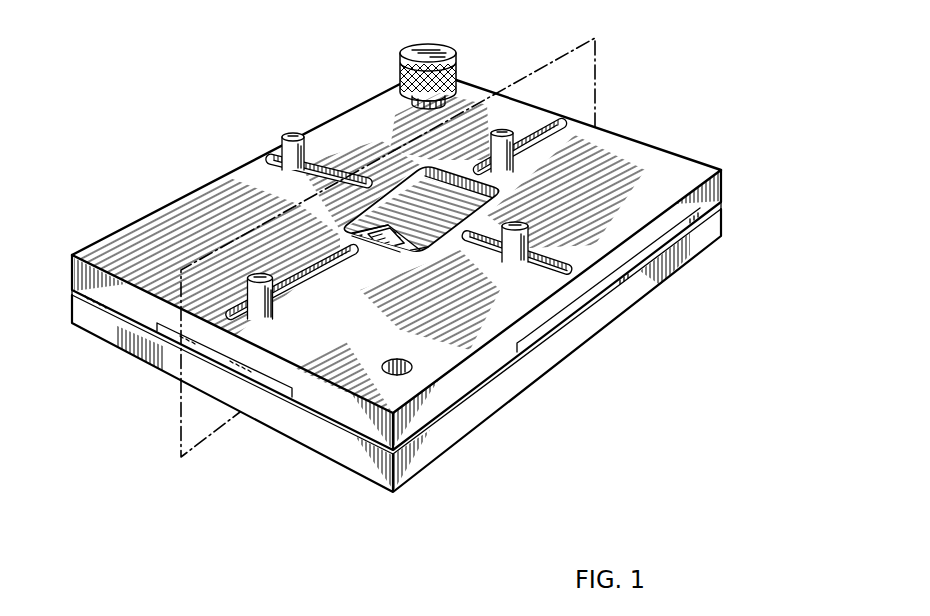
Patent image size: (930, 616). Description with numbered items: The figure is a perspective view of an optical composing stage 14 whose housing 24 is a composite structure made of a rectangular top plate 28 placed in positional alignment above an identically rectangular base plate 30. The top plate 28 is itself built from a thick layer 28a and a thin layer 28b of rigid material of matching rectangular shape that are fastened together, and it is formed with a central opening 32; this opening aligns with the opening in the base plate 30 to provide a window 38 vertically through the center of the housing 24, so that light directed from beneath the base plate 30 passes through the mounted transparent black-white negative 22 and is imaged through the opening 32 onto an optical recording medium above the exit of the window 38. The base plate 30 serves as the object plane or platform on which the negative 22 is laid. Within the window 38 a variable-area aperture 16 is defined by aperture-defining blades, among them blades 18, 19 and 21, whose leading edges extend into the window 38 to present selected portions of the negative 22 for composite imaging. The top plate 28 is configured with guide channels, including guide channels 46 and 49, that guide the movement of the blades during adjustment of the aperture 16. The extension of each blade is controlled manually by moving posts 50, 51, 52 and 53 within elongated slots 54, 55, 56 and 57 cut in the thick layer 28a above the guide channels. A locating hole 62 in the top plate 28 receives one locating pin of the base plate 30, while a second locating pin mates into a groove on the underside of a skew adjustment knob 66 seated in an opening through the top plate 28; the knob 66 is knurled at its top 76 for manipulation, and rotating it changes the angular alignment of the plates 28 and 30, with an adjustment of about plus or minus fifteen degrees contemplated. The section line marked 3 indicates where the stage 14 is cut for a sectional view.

The optical composing stage 14 is at (197, 42).
The variable-area aperture 16 is at (377, 237).
The aperture-defining blade 18 is at (393, 253).
The aperture-defining blade 19 is at (433, 235).
The aperture-defining blade 21 is at (403, 250).
The black-white negative 22 is at (352, 233).
The housing 24 is at (126, 222).
The top plate 28 is at (402, 331).
The thick layer 28a is at (722, 188).
The thin layer 28b is at (722, 223).
The base plate 30 is at (72, 300).
The central opening 32 is at (483, 193).
The window 38 is at (394, 217).
The guide channel 46 is at (280, 400).
The guide channel 49 is at (537, 340).
The post 50 is at (272, 294).
The post 51 is at (512, 112).
The post 52 is at (523, 223).
The post 53 is at (305, 112).
The elongated slot 54 is at (318, 270).
The elongated slot 55 is at (528, 147).
The elongated slot 56 is at (316, 171).
The elongated slot 57 is at (541, 273).
The locating hole 62 is at (383, 361).
The skew adjustment knob 66 is at (435, 63).
The knurled top 76 is at (403, 55).
The section line 3- 3 is at (580, 33).